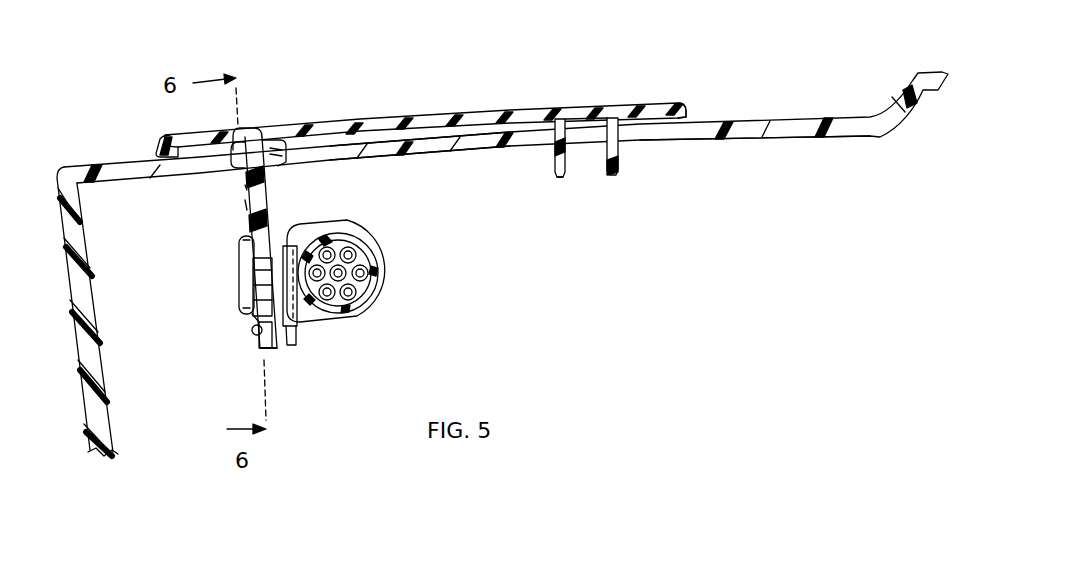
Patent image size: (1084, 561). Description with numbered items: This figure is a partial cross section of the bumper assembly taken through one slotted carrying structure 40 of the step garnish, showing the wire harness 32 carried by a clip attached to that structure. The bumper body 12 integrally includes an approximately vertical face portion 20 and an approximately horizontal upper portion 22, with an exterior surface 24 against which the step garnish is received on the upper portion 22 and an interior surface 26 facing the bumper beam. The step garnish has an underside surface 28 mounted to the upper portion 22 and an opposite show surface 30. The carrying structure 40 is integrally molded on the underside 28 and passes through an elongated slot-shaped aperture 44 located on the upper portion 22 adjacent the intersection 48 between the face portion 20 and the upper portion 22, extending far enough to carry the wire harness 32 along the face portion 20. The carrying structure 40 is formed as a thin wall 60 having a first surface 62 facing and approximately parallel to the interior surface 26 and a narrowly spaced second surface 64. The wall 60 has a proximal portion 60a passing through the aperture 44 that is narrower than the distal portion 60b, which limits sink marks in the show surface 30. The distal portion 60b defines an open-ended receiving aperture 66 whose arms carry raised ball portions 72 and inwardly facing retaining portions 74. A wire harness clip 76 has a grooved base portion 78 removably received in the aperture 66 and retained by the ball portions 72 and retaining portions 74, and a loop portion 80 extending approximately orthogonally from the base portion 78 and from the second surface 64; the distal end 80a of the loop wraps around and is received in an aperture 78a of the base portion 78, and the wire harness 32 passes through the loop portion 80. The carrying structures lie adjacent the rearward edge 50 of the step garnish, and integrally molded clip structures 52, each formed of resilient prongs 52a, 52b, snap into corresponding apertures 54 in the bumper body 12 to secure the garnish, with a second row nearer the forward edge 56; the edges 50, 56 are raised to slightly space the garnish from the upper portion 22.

The bumper body 12 is at (96, 462).
The face portion 20 is at (90, 400).
The upper portion 22 is at (757, 137).
The exterior surface 24 is at (382, 131).
The interior surface 26 is at (707, 143).
The underside surface 28 is at (432, 132).
The show surface 30 is at (473, 107).
The wire harness 32 is at (377, 290).
The carrying structure 40 is at (236, 206).
The aperture 44 is at (270, 142).
The intersection 48 is at (85, 190).
The rearward edge 50 is at (163, 147).
The clip structure 52 is at (556, 185).
The resilient prong 52a is at (560, 158).
The resilient prong 52b is at (627, 157).
The aperture 54 is at (562, 135).
The forward edge 56 is at (683, 108).
The wall 60 is at (266, 204).
The proximal portion 60a is at (240, 148).
The distal portion 60b is at (258, 352).
The first surface 62 is at (245, 187).
The second surface 64 is at (268, 190).
The receiving aperture 66 is at (253, 314).
The raised ball portion 72 is at (253, 333).
The retaining portion 74 is at (271, 340).
The wire harness clip 76 is at (311, 342).
The base portion 78 is at (246, 287).
The aperture 78a is at (253, 273).
The loop portion 80 is at (387, 270).
The distal end 80a is at (293, 346).